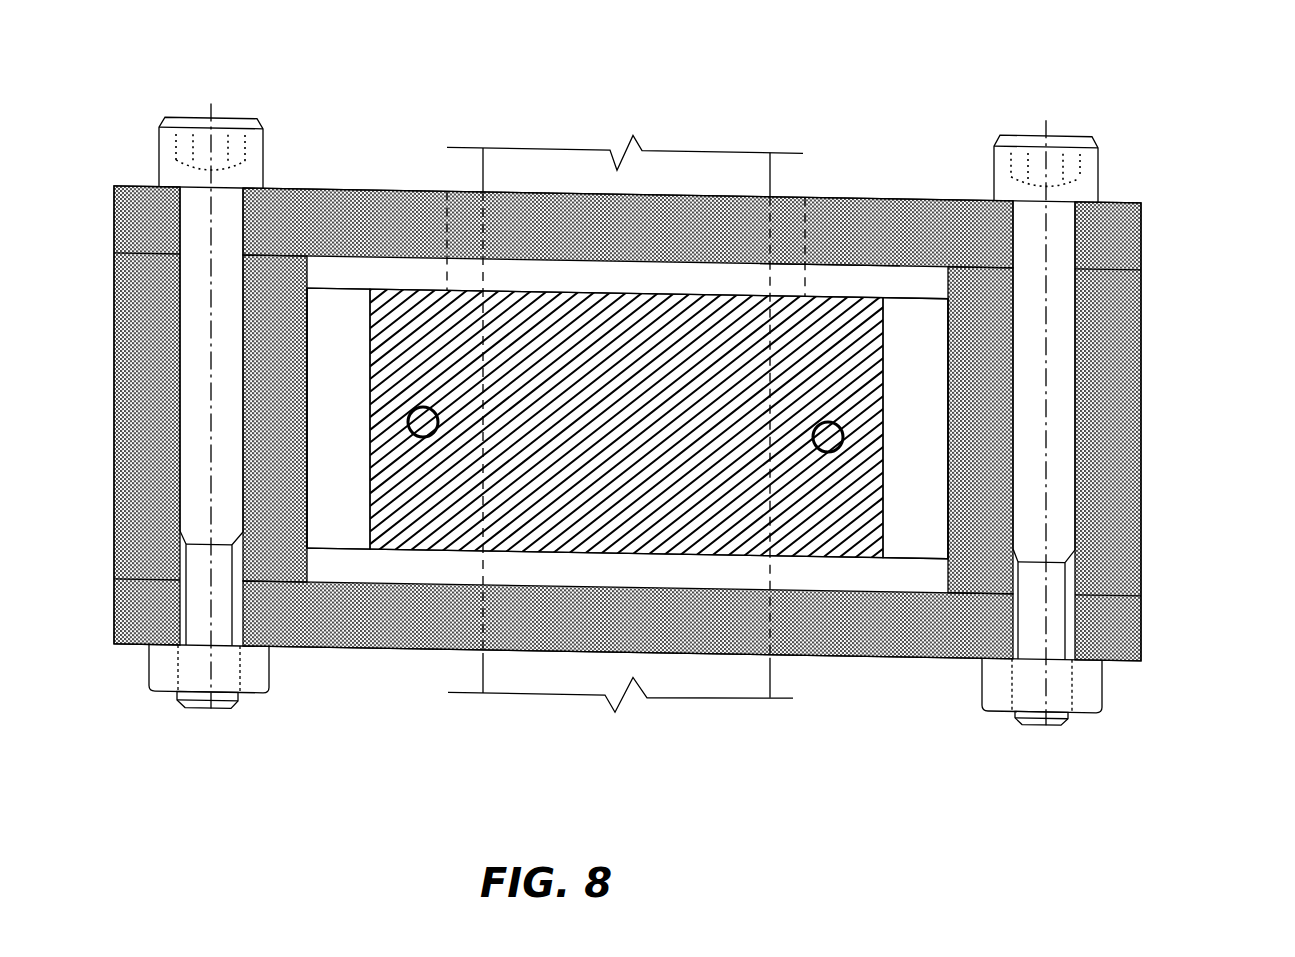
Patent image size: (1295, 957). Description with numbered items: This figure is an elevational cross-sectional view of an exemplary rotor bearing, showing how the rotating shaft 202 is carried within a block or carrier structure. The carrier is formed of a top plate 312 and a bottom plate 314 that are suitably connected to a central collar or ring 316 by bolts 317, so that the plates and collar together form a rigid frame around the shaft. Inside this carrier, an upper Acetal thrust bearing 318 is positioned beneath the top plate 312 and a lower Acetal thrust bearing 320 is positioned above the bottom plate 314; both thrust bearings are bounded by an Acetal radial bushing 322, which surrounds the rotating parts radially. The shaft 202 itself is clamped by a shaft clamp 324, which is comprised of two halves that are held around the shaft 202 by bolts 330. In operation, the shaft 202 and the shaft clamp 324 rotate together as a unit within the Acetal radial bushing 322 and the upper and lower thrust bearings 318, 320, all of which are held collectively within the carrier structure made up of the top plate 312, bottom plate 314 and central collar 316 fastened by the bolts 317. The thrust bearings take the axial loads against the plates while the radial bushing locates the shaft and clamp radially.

The shaft 202 is at (527, 167).
The top plate 312 is at (1137, 232).
The bottom plate 314 is at (1120, 632).
The central collar or ring 316 is at (1120, 515).
The bolts 317 is at (177, 122).
The upper Acetal thrust bearing 318 is at (827, 267).
The lower Acetal thrust bearing 320 is at (367, 563).
The Acetal radial bushing 322 is at (907, 533).
The shaft clamp 324 is at (822, 540).
The bolts 330 is at (838, 425).